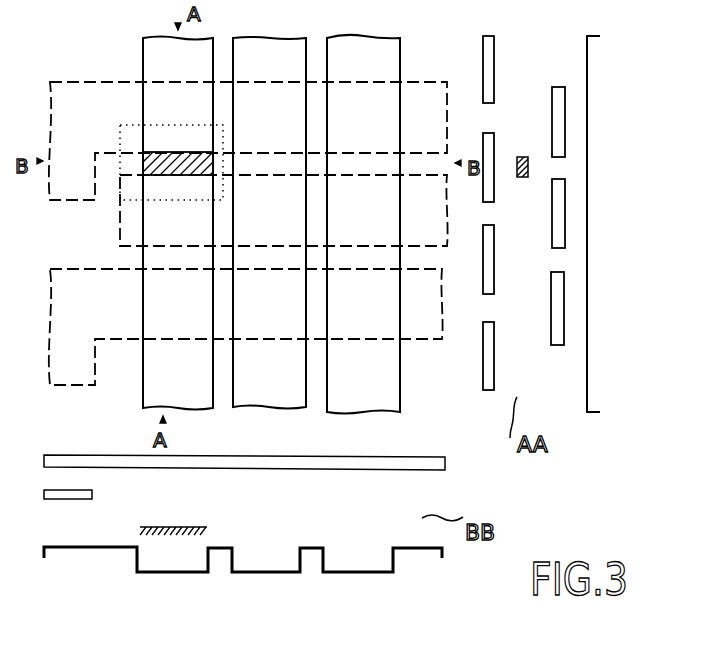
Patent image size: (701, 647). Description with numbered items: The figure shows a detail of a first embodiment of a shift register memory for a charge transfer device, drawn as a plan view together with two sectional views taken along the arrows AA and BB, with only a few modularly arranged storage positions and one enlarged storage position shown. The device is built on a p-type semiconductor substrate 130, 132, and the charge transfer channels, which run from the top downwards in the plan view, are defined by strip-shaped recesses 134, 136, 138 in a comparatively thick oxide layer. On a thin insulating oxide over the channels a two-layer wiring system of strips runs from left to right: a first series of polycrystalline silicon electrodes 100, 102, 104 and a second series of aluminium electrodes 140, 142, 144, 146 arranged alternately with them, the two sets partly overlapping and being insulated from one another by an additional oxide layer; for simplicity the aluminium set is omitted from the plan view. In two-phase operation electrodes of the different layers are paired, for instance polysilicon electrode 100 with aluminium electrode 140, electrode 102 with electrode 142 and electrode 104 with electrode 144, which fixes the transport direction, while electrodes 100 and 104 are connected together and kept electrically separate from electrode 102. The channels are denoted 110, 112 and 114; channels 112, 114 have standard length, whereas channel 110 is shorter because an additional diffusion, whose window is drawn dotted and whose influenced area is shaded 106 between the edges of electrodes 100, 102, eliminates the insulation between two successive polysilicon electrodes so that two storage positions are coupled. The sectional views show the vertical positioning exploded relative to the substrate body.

The polysilicon electrode 100 is at (431, 82).
The polysilicon electrode 102 is at (447, 228).
The polysilicon electrode 104 is at (427, 340).
The contact region 106 is at (118, 157).
The shorter channel 110 is at (202, 409).
The channel 112 is at (290, 408).
The channel 114 is at (387, 412).
The semiconductor substrate 130 is at (262, 628).
The semiconductor substrate 132 is at (643, 292).
The strip-shaped recess 134 is at (193, 568).
The strip-shaped recess 136 is at (290, 568).
The strip-shaped recess 138 is at (382, 568).
The aluminium electrode 140 is at (494, 63).
The aluminium electrode 142 is at (494, 157).
The aluminium electrode 144 is at (494, 260).
The aluminium electrode 146 is at (494, 365).